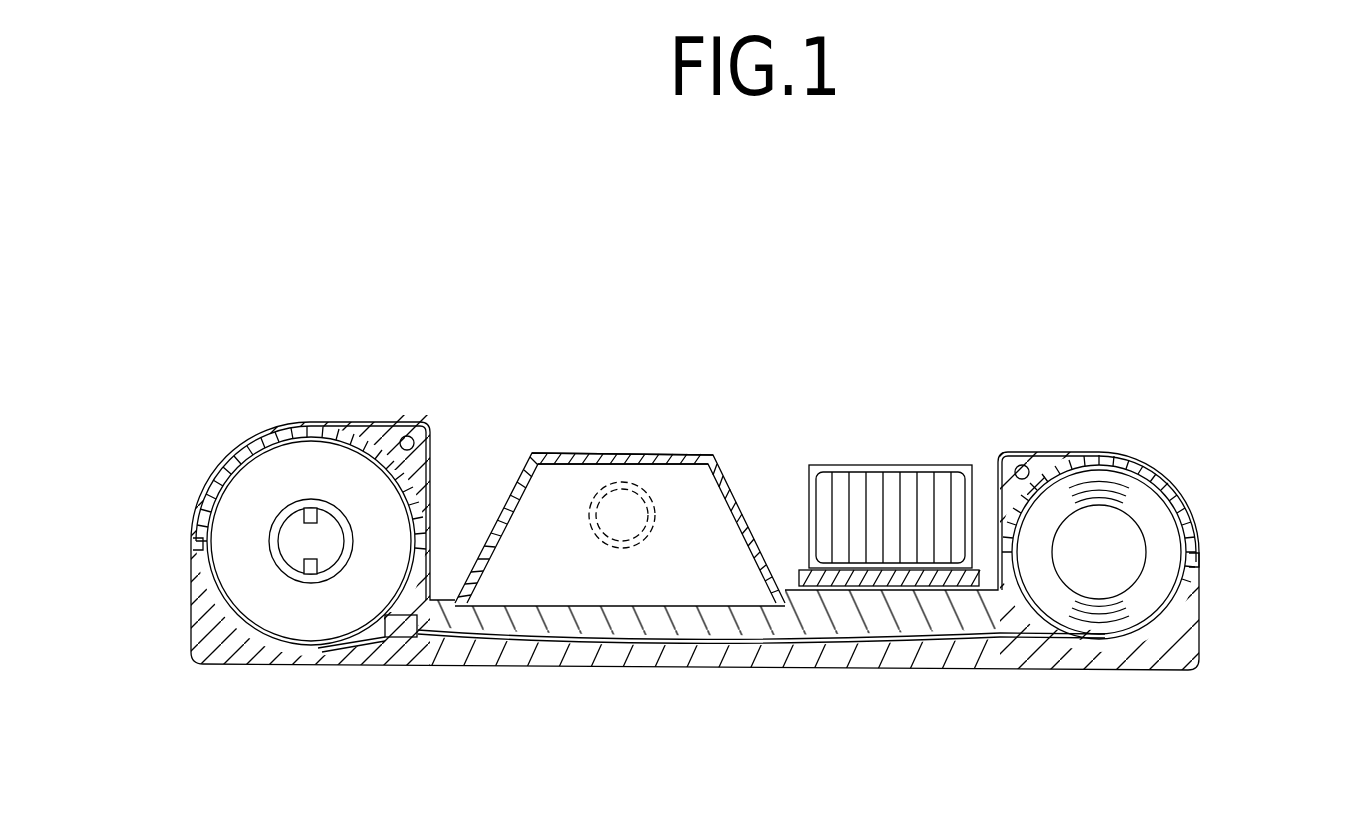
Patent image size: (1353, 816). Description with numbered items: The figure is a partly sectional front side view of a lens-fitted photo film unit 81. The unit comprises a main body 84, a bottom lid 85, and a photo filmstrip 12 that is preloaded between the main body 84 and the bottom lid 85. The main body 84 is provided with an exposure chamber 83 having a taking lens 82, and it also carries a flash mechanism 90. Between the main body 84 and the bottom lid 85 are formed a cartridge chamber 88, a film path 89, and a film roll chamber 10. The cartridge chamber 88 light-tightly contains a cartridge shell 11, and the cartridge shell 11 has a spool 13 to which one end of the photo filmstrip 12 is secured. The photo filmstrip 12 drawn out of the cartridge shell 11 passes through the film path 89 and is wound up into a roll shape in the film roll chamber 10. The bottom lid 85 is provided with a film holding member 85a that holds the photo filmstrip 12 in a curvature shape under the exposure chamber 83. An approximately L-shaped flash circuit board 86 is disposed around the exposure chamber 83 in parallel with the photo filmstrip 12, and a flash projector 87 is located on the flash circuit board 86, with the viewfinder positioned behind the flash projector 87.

The film roll chamber 10 is at (1028, 618).
The cartridge shell 11 is at (310, 615).
The photo filmstrip 12 is at (1160, 522).
The spool 13 is at (290, 523).
The lens-fitted photo film unit 81 is at (541, 352).
The taking lens 82 is at (598, 518).
The exposure chamber 83 is at (640, 454).
The main body 84 is at (730, 458).
The bottom lid 85 is at (702, 667).
The film holding member 85a is at (600, 641).
The flash circuit board 86 is at (920, 582).
The flash projector 87 is at (890, 490).
The cartridge chamber 88 is at (398, 602).
The film path 89 is at (818, 638).
The flash mechanism 90 is at (963, 452).